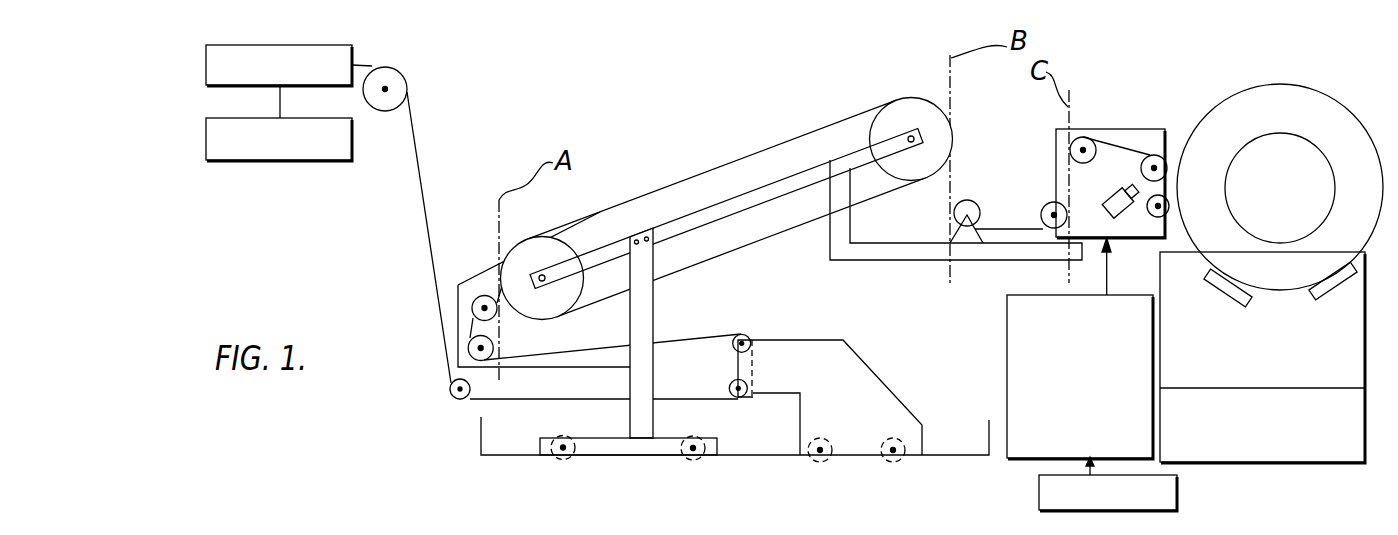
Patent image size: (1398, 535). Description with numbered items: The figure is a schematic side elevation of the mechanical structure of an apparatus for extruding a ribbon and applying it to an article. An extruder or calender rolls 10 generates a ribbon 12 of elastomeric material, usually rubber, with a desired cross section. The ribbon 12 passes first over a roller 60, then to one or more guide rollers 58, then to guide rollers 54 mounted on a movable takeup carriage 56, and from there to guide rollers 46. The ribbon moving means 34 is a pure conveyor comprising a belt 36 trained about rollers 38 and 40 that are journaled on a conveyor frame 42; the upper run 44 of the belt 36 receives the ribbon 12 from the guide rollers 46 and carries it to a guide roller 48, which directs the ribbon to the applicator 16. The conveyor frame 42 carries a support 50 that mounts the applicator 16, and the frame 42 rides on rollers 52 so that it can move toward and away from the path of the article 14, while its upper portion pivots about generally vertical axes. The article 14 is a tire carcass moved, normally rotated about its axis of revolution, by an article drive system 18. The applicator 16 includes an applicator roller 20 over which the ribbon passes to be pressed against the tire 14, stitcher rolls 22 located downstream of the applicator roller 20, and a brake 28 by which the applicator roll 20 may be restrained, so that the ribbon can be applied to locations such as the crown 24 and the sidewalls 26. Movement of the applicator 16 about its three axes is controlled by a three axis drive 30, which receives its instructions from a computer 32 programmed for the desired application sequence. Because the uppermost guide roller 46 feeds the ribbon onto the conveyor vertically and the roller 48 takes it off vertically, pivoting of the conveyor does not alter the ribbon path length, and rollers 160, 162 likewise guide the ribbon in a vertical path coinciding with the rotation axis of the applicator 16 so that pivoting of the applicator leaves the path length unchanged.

The extruder or calender rolls 10 is at (350, 46).
The ribbon 12 is at (374, 64).
The article 14 is at (1280, 177).
The applicator 16 is at (1079, 190).
The article drive system 18 is at (1298, 462).
The applicator roller 20 is at (1158, 156).
The stitcher rolls 22 is at (1153, 214).
The crown 24 is at (1233, 95).
The sidewalls 26 is at (1342, 150).
The brake 28 is at (1110, 196).
The three axis drive 30 is at (1006, 328).
The computer 32 is at (325, 160).
The ribbon moving means 34 is at (742, 259).
The belt 36 is at (836, 126).
The roller 38 is at (526, 250).
The roller 40 is at (938, 108).
The conveyor frame 42 is at (651, 306).
The upper run 44 is at (663, 187).
The guide rollers 46 is at (470, 343).
The guide roller 48 is at (966, 202).
The support 50 is at (935, 252).
The rollers 52 is at (568, 436).
The guide rollers 54 is at (730, 383).
The takeup carriage 56 is at (862, 370).
The guide rollers 58 is at (455, 396).
The roller 60 is at (409, 86).
The roller 160 is at (1050, 203).
The roller 162 is at (1074, 147).